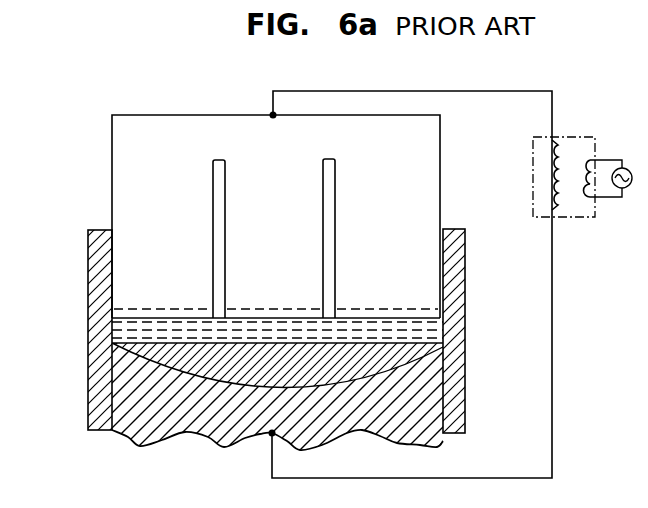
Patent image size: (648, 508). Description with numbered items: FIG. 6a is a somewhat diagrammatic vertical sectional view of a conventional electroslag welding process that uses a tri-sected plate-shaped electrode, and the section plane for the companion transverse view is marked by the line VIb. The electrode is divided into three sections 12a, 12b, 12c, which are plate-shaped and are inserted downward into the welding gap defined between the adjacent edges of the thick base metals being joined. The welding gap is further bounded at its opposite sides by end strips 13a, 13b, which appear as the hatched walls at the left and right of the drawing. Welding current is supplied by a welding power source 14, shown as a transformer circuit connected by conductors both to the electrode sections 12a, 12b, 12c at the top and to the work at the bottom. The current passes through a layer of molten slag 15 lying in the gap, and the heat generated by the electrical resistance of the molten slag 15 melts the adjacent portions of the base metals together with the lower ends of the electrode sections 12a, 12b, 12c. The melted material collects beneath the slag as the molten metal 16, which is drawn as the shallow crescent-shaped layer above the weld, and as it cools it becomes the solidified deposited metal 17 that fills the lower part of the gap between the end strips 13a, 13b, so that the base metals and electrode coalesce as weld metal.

The electrode section 12a is at (172, 192).
The electrode section 12b is at (284, 192).
The electrode section 12c is at (388, 192).
The end strip 13a is at (88, 383).
The end strip 13b is at (460, 395).
The welding power source 14 is at (576, 218).
The molten slag 15 is at (440, 332).
The molten metal 16 is at (405, 357).
The solidified deposited metal 17 is at (427, 432).
The section line VIb is at (52, 272).